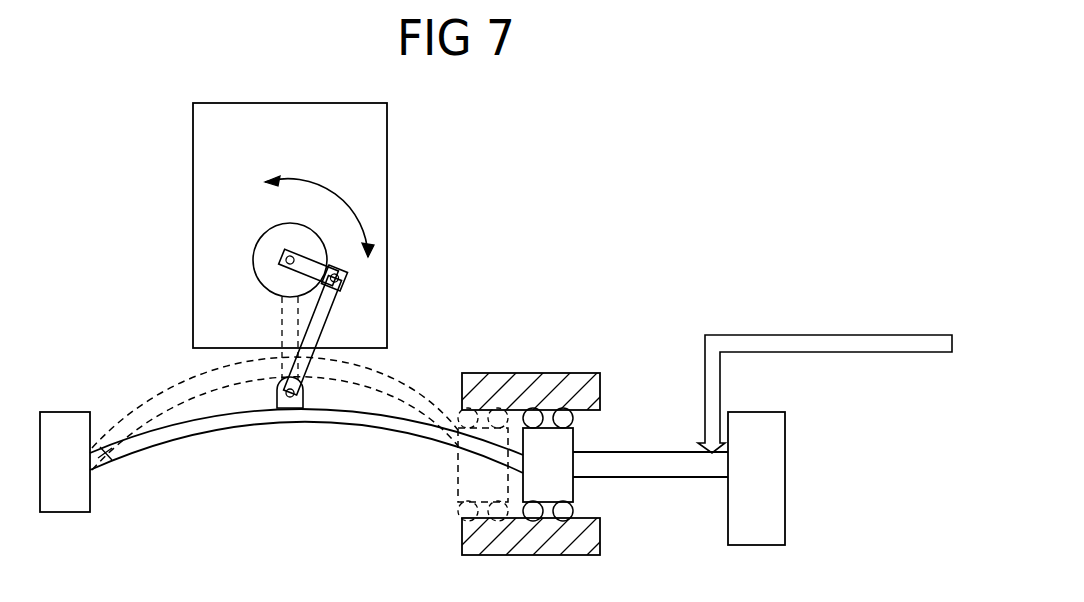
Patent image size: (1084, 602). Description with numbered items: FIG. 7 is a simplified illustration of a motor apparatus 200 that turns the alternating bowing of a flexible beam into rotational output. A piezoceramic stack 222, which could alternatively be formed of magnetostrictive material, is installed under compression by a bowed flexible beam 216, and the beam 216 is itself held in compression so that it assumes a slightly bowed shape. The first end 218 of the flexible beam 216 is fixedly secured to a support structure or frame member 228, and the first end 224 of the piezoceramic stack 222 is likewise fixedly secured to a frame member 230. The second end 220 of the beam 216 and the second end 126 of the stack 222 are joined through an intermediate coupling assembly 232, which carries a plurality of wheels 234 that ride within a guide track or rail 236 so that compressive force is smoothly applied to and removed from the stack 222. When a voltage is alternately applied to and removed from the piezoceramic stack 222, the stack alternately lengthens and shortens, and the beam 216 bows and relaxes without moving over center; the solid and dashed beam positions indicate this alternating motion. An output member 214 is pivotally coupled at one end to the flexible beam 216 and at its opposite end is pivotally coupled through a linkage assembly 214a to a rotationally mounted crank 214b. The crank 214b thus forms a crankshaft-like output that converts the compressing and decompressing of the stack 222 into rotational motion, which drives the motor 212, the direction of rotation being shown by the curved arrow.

The motor apparatus 200 is at (705, 300).
The motor 212 is at (367, 162).
The output member 214 is at (327, 310).
The linkage assembly 214a is at (298, 276).
The crank 214b is at (272, 250).
The flexible beam 216 is at (162, 398).
The first end of flexible beam 218 is at (105, 455).
The second end of flexible beam 220 is at (498, 455).
The piezoceramic stack 222 is at (645, 452).
The first end of piezoceramic stack 224 is at (712, 470).
The second end of piezoceramic stack 126 is at (610, 468).
The frame member 228 is at (58, 490).
The frame member 230 is at (735, 412).
The coupling assembly 232 is at (577, 437).
The wheels 234 is at (533, 418).
The guide track 236 is at (473, 530).